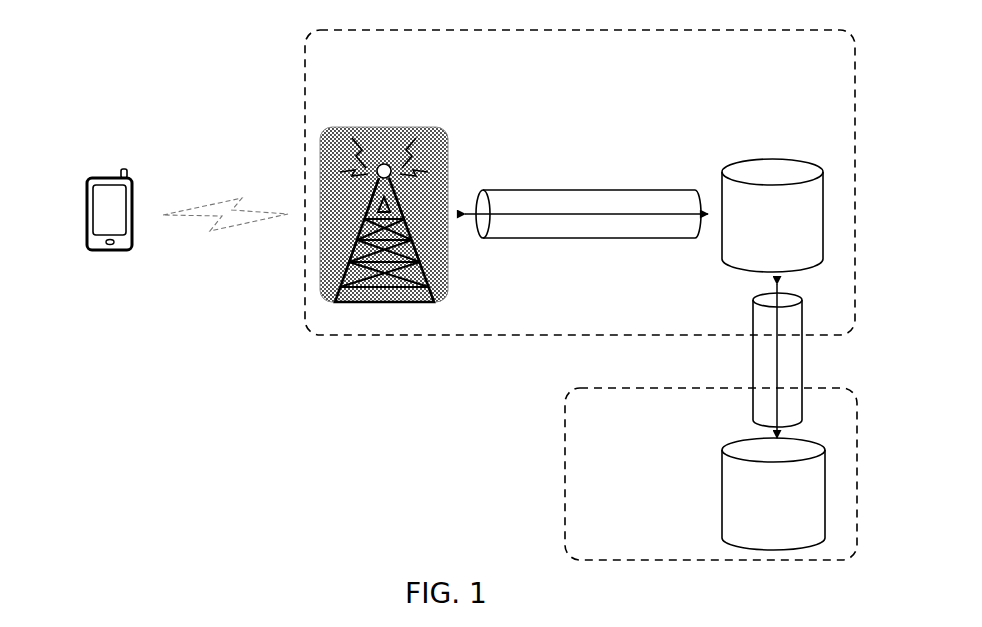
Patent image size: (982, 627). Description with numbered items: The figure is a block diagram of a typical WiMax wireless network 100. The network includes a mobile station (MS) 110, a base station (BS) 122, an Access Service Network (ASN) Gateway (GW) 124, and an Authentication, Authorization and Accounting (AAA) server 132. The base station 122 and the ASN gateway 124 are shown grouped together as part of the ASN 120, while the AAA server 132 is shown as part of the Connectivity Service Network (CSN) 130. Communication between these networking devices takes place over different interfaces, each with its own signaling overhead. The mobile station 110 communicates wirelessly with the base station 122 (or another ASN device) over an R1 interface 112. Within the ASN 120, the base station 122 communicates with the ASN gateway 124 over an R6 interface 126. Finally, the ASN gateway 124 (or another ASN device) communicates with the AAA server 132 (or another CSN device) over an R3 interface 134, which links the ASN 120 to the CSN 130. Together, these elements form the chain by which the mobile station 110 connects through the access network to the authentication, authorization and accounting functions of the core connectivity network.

The WiMax wireless network 100 is at (192, 92).
The mobile station 110 is at (107, 178).
The R1 interface 112 is at (216, 202).
The Access Service Network 120 is at (580, 182).
The base station 122 is at (341, 128).
The Access Service Network Gateway 124 is at (770, 176).
The R6 interface 126 is at (556, 191).
The Connectivity Service Network 130 is at (711, 474).
The AAA server 132 is at (722, 488).
The R3 interface 134 is at (753, 360).